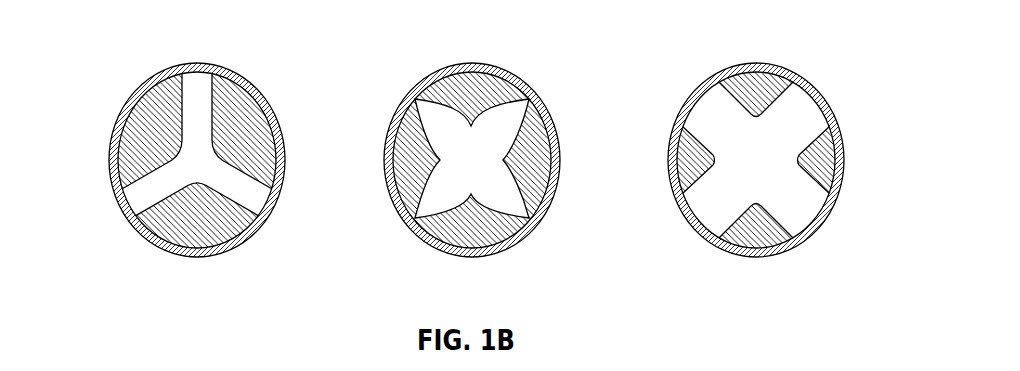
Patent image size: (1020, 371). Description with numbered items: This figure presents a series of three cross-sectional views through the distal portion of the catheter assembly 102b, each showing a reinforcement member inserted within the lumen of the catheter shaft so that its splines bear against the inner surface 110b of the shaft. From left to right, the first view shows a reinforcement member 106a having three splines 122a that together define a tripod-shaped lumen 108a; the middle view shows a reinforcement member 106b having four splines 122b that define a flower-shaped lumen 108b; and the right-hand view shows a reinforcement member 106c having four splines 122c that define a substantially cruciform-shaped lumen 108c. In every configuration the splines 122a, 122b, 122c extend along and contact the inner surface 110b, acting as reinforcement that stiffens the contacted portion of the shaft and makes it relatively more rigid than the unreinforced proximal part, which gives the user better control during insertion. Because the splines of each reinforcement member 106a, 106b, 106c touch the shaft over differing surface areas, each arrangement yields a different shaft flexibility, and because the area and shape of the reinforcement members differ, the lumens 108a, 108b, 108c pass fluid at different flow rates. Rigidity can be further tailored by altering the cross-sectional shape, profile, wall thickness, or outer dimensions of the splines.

The distal portion of the catheter assembly 102b is at (167, 71).
The reinforcement member 106a is at (190, 177).
The reinforcement member 106b is at (475, 158).
The reinforcement member 106c is at (733, 159).
The tripod-shaped lumen 108a is at (197, 162).
The flower-shaped lumen 108b is at (472, 158).
The cruciform-shaped lumen 108c is at (755, 160).
The inner surface 110b is at (128, 196).
The splines 122a is at (242, 103).
The splines 122b is at (468, 97).
The splines 122c is at (755, 90).